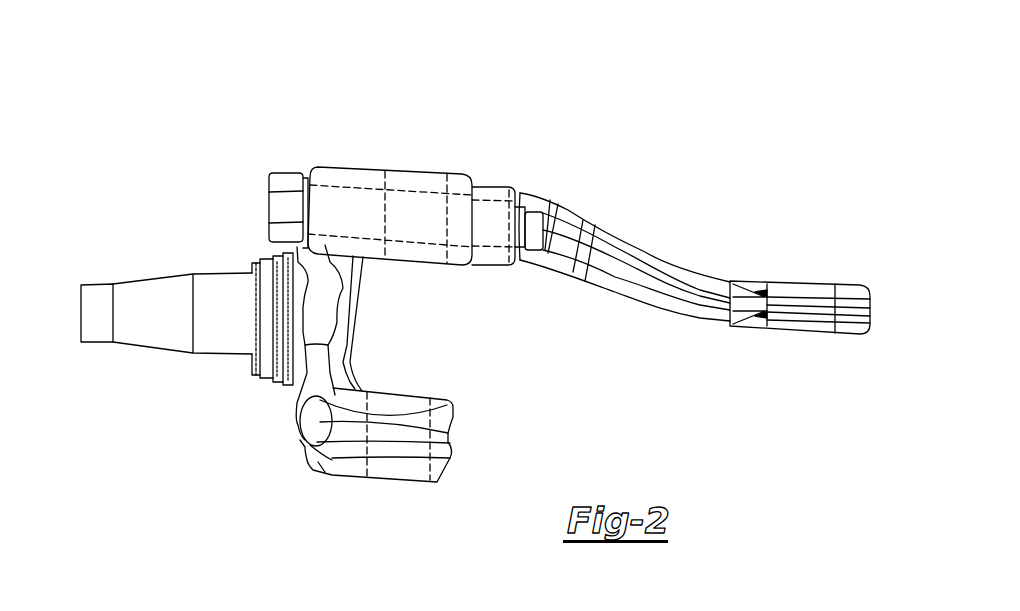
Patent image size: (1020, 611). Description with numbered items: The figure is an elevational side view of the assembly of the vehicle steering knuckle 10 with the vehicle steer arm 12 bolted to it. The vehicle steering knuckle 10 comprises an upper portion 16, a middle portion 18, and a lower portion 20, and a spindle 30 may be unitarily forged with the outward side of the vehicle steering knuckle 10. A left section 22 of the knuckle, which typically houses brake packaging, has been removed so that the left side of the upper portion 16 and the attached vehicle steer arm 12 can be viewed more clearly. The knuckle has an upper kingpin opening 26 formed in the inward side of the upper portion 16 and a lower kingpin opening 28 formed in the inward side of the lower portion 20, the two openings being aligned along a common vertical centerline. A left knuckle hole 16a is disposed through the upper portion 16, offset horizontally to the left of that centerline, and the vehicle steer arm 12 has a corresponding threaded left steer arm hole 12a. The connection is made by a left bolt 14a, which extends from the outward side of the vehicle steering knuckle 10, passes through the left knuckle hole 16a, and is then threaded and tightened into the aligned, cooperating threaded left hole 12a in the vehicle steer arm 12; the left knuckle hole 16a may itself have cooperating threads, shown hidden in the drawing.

The vehicle steering knuckle 10 is at (565, 72).
The vehicle steer arm 12 is at (657, 270).
The left steer arm hole 12a is at (497, 213).
The left bolt 14a is at (280, 208).
The upper portion 16 is at (347, 177).
The left knuckle hole 16a is at (437, 205).
The middle portion 18 is at (338, 335).
The lower portion 20 is at (470, 441).
The left section 22 is at (256, 247).
The upper kingpin opening 26 is at (416, 152).
The lower kingpin opening 28 is at (378, 490).
The spindle 30 is at (148, 331).